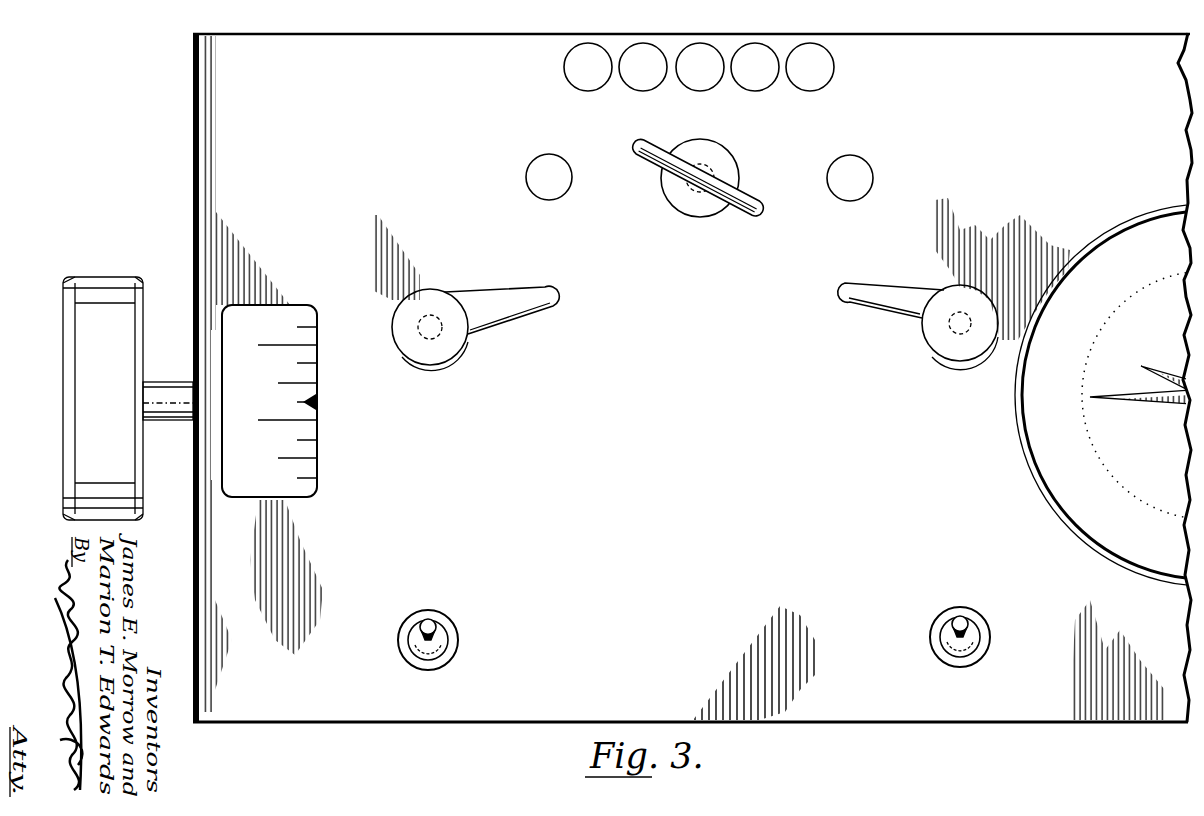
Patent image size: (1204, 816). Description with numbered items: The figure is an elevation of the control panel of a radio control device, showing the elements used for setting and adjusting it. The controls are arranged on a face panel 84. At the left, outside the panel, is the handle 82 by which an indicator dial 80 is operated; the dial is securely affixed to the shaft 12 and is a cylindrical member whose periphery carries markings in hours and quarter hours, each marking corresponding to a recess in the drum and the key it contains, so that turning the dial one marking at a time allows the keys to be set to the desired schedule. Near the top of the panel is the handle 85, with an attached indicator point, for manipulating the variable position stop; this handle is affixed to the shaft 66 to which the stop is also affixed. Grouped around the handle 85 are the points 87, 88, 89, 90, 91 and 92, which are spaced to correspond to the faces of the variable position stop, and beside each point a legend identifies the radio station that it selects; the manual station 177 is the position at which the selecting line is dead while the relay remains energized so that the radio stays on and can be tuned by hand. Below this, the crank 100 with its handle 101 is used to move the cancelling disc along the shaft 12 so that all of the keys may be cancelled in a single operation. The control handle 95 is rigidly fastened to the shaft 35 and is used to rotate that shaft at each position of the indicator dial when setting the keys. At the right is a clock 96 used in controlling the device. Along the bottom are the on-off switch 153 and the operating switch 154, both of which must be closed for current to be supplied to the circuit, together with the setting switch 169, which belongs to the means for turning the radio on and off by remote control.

The face panel 84 is at (193, 182).
The handle 82 is at (85, 392).
The shaft 12 is at (165, 378).
The indicator dial 80 is at (300, 486).
The crank 100 is at (437, 318).
The handle 101 is at (548, 307).
The control handle 95 is at (845, 303).
The shaft 35 is at (950, 323).
The clock 96 is at (1125, 217).
The shaft 66 is at (730, 172).
The handle 85 is at (741, 221).
The point 92 is at (588, 91).
The point 91 is at (660, 110).
The point 90 is at (700, 91).
The point 89 is at (738, 110).
The point 88 is at (810, 91).
The manual station 177 is at (572, 177).
The point 87 is at (827, 178).
The on-off switch 153 is at (455, 636).
The operating switch 154 is at (1012, 593).
The setting switch 169 is at (992, 679).